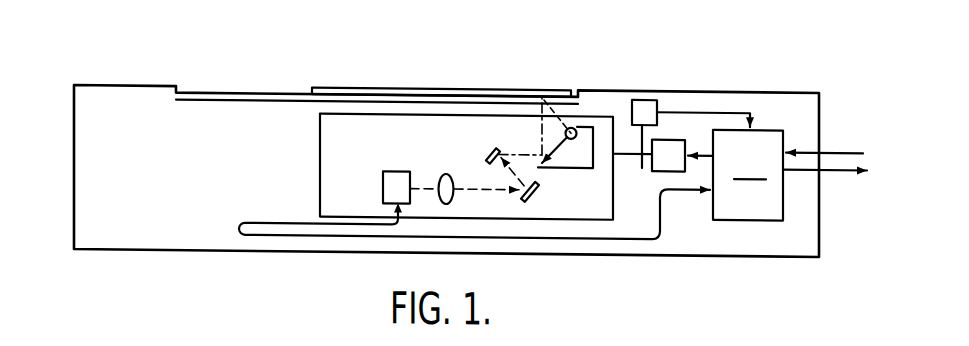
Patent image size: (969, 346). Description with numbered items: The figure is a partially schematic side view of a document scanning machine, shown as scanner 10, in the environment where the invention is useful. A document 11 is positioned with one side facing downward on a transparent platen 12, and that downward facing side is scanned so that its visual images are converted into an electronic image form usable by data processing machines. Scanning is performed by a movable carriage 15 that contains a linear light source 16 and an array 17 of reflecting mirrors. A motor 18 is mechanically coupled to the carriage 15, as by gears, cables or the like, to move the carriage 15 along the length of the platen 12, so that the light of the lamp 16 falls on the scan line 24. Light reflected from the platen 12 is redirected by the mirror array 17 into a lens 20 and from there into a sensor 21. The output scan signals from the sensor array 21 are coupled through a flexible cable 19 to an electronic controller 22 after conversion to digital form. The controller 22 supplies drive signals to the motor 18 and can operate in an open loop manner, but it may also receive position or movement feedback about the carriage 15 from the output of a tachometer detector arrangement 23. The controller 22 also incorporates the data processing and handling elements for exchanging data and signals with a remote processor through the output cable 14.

The scanner 10 is at (66, 192).
The document 11 is at (358, 84).
The transparent platen 12 is at (247, 90).
The output cable 14 is at (841, 131).
The movable carriage 15 is at (319, 157).
The linear light source 16 is at (583, 112).
The array of reflecting mirrors 17 is at (520, 131).
The motor 18 is at (667, 140).
The flexible cable 19 is at (662, 213).
The lens 20 is at (443, 171).
The sensor 21 is at (382, 174).
The electronic controller 22 is at (748, 175).
The tachometer detector arrangement 23 is at (645, 99).
The scan line 24 is at (544, 93).